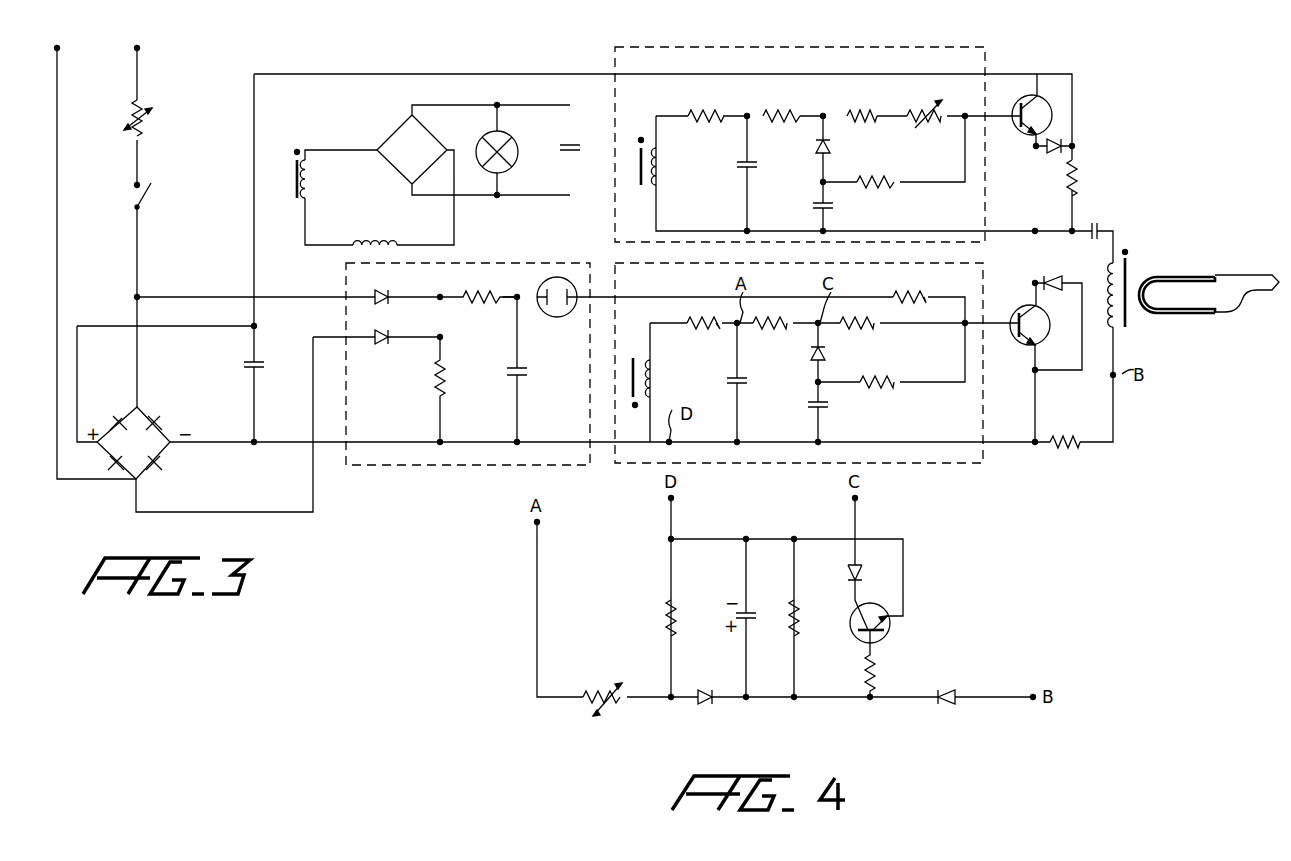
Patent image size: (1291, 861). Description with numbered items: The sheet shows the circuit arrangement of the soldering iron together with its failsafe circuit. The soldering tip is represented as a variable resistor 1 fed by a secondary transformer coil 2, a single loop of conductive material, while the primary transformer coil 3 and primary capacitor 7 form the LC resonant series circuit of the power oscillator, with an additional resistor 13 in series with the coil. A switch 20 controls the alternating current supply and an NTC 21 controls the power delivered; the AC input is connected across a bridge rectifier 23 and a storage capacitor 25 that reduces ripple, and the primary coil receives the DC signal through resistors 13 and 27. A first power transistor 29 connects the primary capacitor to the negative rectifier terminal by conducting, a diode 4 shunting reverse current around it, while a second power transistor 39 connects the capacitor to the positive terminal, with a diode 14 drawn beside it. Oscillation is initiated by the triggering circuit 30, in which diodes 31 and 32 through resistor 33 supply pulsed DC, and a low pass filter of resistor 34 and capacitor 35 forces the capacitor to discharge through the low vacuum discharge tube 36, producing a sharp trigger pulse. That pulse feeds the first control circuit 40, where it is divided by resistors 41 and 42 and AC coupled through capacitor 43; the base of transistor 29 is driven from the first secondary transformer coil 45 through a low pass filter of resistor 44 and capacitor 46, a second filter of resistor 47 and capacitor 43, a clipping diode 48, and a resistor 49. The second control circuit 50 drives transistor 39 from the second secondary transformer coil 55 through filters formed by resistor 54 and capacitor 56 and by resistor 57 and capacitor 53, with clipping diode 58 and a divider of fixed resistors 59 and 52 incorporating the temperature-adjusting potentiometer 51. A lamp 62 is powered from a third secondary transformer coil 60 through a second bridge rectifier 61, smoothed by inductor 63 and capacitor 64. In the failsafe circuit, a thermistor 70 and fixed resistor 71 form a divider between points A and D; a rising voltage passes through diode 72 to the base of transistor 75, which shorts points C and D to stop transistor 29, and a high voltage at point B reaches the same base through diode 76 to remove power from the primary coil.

In FIG. 3, the variable resistor 1 is at (1268, 274).
In FIG. 3, the secondary transformer coil 2 is at (1186, 274).
In FIG. 3, the primary transformer coil 3 is at (1105, 282).
In FIG. 3, the diode 4 is at (1058, 276).
In FIG. 3, the primary capacitor 7 is at (1095, 218).
In FIG. 3, the resistor 13 is at (1060, 448).
In FIG. 3, the diode 14 is at (1052, 154).
In FIG. 3, the switch 20 is at (150, 196).
In FIG. 3, the NTC 21 is at (148, 128).
In FIG. 3, the bridge rectifier 23 is at (143, 415).
In FIG. 3, the storage capacitor 25 is at (259, 370).
In FIG. 3, the resistor 27 is at (1078, 182).
In FIG. 3, the first power transistor 29 is at (1024, 346).
In FIG. 3, the triggering circuit 30 is at (445, 467).
In FIG. 3, the diode 31 is at (368, 286).
In FIG. 3, the diode 32 is at (383, 346).
In FIG. 3, the resistor 33 is at (448, 372).
In FIG. 3, the resistor 34 is at (477, 288).
In FIG. 3, the capacitor 35 is at (524, 380).
In FIG. 3, the low vacuum discharge tube 36 is at (568, 315).
In FIG. 3, the second power transistor 39 is at (1020, 134).
In FIG. 3, the first control circuit 40 is at (950, 466).
In FIG. 3, the resistor 41 is at (932, 280).
In FIG. 3, the resistor 42 is at (888, 378).
In FIG. 3, the capacitor 43 is at (805, 412).
In FIG. 3, the resistor 44 is at (686, 317).
In FIG. 3, the first secondary transformer coil 45 is at (655, 385).
In FIG. 3, the capacitor 46 is at (743, 370).
In FIG. 3, the resistor 47 is at (777, 315).
In FIG. 3, the diode 48 is at (828, 352).
In FIG. 3, the resistor 49 is at (863, 315).
In FIG. 3, the second control circuit 50 is at (838, 47).
In FIG. 3, the potentiometer 51 is at (915, 108).
In FIG. 3, the fixed resistor 52 is at (883, 178).
In FIG. 3, the capacitor 53 is at (812, 205).
In FIG. 3, the resistor 54 is at (700, 108).
In FIG. 3, the second secondary transformer coil 55 is at (662, 170).
In FIG. 3, the capacitor 56 is at (752, 160).
In FIG. 3, the resistor 57 is at (778, 108).
In FIG. 3, the diode 58 is at (832, 146).
In FIG. 3, the fixed resistor 59 is at (853, 108).
In FIG. 3, the third secondary transformer coil 60 is at (322, 166).
In FIG. 3, the second bridge rectifier 61 is at (473, 175).
In FIG. 3, the lamp 62 is at (515, 150).
In FIG. 3, the inductor 63 is at (391, 239).
In FIG. 3, the capacitor 64 is at (582, 150).
In FIG. 4, the thermistor 70 is at (606, 688).
In FIG. 4, the fixed resistor 71 is at (663, 620).
In FIG. 4, the diode 72 is at (704, 705).
In FIG. 4, the transistor 75 is at (892, 628).
In FIG. 4, the diode 76 is at (950, 688).